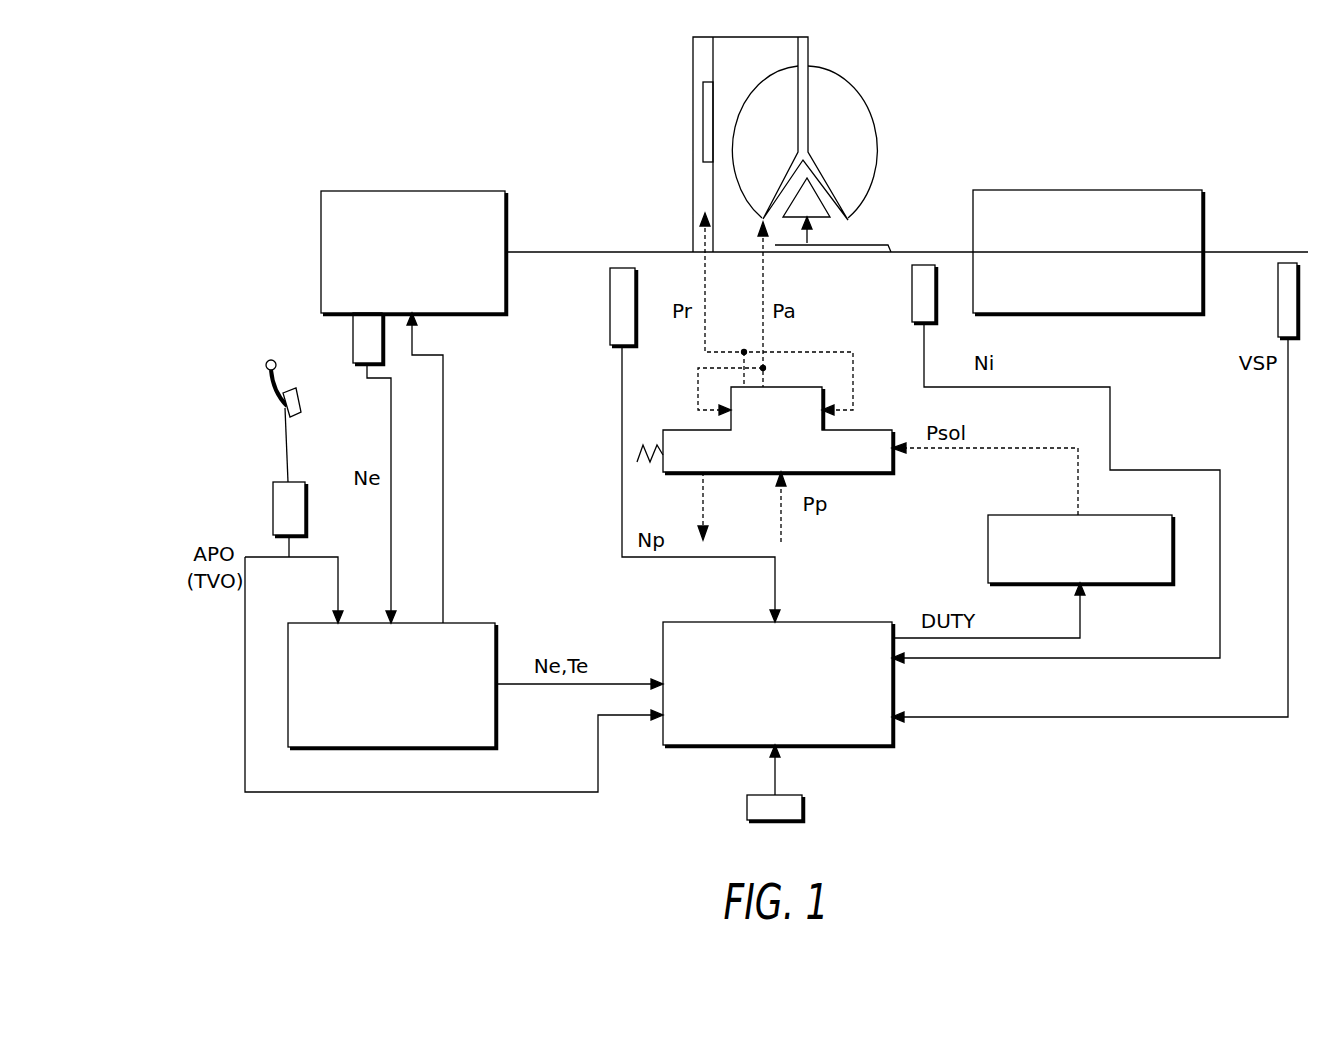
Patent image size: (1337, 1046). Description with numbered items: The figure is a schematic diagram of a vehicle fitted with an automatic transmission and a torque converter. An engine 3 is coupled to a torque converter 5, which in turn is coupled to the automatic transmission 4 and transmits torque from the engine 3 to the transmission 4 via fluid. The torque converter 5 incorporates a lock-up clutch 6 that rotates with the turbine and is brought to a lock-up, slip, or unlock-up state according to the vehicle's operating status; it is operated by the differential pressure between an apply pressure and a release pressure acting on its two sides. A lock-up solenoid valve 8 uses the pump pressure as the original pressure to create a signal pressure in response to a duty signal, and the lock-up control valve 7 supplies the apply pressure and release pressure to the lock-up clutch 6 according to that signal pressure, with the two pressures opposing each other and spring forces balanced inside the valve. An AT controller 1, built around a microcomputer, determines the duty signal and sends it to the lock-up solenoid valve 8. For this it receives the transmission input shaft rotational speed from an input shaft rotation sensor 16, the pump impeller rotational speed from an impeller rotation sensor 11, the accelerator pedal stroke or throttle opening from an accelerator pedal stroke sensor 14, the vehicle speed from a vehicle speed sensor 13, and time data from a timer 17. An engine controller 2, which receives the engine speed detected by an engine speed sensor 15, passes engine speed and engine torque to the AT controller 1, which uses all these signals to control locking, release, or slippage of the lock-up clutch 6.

The AT controller 1 is at (712, 628).
The engine controller 2 is at (318, 630).
The engine 3 is at (343, 196).
The automatic transmission 4 is at (996, 196).
The torque converter 5 is at (863, 77).
The lock-up clutch 6 is at (710, 62).
The lock-up control valve 7 is at (871, 410).
The lock-up solenoid valve 8 is at (1016, 522).
The impeller rotation sensor 11 is at (610, 320).
The vehicle speed sensor 13 is at (1298, 300).
The accelerator pedal stroke sensor 14 is at (273, 513).
The engine speed sensor 15 is at (353, 330).
The input shaft rotation sensor 16 is at (912, 283).
The timer 17 is at (795, 800).